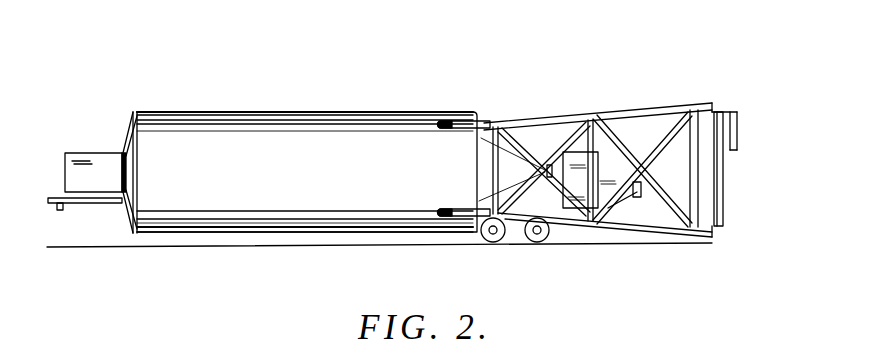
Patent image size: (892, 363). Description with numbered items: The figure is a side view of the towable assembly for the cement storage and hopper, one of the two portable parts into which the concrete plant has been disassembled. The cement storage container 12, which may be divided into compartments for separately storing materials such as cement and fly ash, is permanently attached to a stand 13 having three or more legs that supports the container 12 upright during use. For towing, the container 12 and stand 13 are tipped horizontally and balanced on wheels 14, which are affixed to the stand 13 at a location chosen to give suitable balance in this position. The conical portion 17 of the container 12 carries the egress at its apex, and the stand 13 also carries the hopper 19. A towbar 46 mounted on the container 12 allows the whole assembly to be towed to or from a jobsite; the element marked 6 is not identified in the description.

The cement storage container 12 is at (322, 188).
The towbar 46 is at (98, 207).
The conical portion 17 is at (507, 167).
The drive housing 6 is at (553, 160).
The stand 13 is at (635, 107).
The wheels 14 is at (493, 243).
The hopper 19 is at (603, 193).